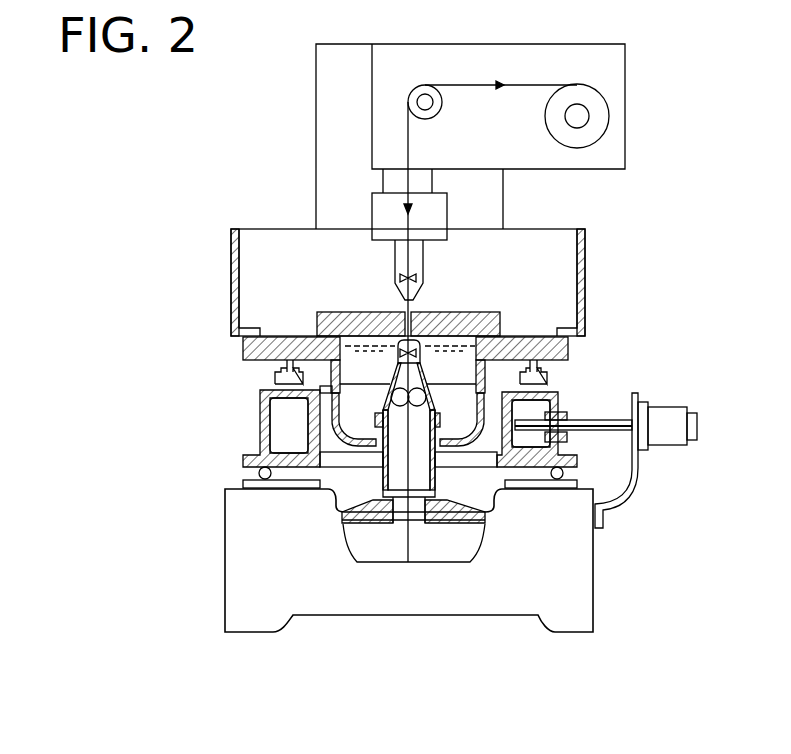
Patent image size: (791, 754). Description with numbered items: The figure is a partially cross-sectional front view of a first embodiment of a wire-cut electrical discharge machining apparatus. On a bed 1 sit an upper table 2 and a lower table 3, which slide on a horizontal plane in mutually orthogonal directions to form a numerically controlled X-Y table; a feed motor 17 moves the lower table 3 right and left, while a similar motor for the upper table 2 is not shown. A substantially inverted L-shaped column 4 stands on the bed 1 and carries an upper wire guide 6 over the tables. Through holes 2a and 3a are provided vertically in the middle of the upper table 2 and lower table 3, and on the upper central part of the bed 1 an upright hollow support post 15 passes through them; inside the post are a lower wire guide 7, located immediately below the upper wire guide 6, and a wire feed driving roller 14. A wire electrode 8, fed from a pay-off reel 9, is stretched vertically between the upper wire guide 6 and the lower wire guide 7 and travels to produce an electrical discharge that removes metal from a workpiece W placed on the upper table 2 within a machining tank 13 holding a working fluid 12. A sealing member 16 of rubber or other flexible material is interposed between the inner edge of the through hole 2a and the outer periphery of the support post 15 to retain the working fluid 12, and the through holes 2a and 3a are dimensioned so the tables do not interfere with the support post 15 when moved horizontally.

The bed 1 is at (383, 602).
The upper table 2 is at (250, 347).
The through hole 2a is at (560, 352).
The lower table 3 is at (260, 425).
The through hole 3a is at (497, 418).
The column 4 is at (330, 136).
The upper wire guide 6 is at (400, 276).
The lower wire guide 7 is at (398, 358).
The wire electrode 8 is at (408, 122).
The electrode pay-off reel 9 is at (600, 108).
The working fluid 12 is at (357, 357).
The machining tank 13 is at (232, 258).
The wire feed driving roller 14 is at (440, 385).
The hollow support post 15 is at (436, 482).
The sealing member 16 is at (466, 443).
The feed motor 17 is at (665, 418).
The workpiece W is at (340, 313).